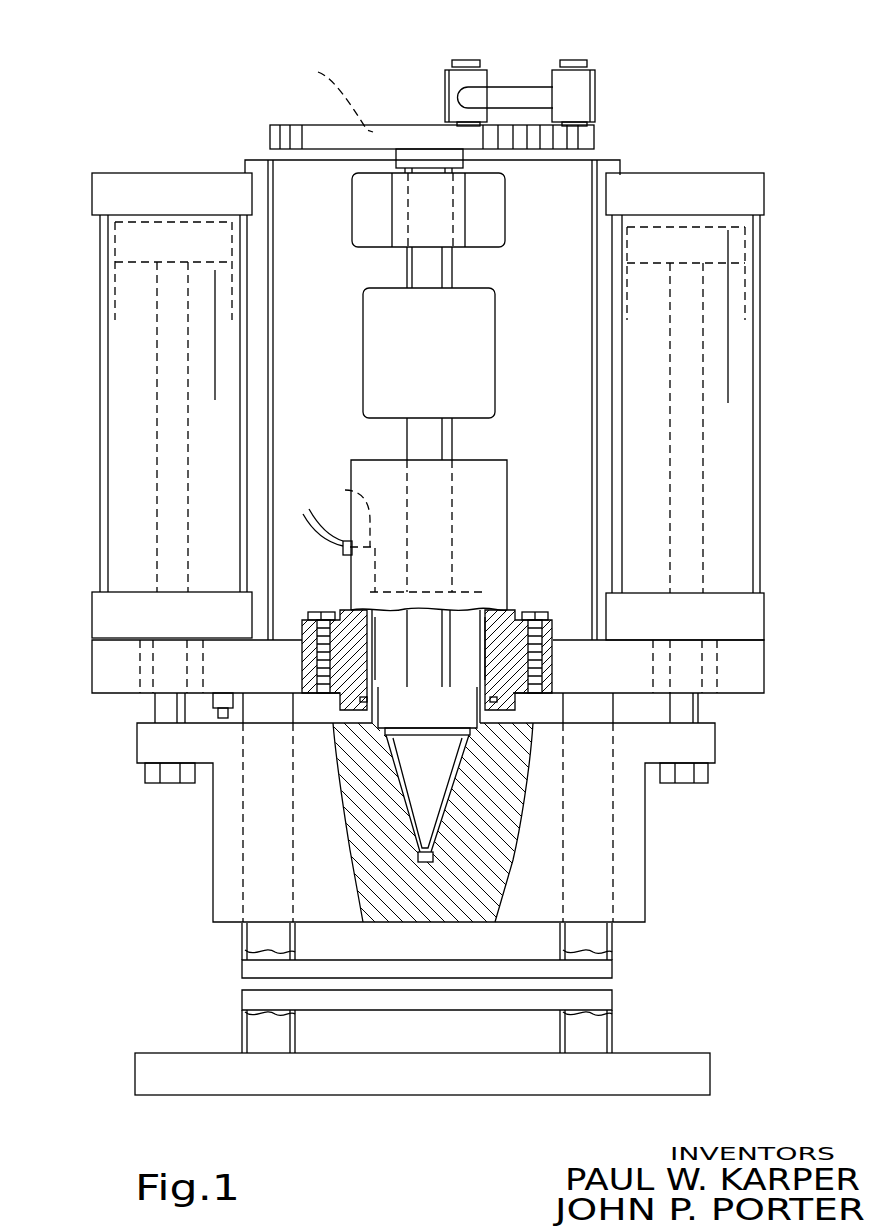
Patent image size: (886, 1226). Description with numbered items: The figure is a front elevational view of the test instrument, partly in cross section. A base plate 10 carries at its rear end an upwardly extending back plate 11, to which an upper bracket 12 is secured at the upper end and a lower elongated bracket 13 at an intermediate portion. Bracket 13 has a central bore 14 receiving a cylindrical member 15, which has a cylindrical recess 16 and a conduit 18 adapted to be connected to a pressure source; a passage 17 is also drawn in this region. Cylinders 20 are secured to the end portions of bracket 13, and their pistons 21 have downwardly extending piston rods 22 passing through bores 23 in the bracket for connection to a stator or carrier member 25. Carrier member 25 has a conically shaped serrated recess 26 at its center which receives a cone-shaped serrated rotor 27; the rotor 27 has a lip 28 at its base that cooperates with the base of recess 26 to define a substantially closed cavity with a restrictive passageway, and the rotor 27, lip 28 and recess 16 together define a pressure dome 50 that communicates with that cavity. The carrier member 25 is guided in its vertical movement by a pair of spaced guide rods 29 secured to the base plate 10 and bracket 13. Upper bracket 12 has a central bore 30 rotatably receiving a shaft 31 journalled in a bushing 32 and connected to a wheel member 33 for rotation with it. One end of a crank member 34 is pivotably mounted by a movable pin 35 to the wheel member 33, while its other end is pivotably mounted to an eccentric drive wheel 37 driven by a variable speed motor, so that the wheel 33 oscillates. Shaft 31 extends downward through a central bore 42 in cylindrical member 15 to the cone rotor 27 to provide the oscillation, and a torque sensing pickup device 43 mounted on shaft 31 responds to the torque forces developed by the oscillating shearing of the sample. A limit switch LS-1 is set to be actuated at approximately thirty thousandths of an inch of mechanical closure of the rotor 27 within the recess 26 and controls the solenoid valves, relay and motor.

The base plate 10 is at (690, 1062).
The back plate 11 is at (603, 170).
The upper bracket 12 is at (524, 183).
The lower elongated bracket 13 is at (745, 688).
The bore 14 is at (548, 662).
The cylindrical member 15 is at (505, 547).
The cylindrical recess 16 is at (378, 622).
The fluid passage 17 is at (340, 531).
The conduit 18 is at (332, 549).
The cylinders 20 is at (113, 187).
The pistons 21 is at (137, 263).
The piston rods 22 is at (163, 706).
The bores 23 is at (143, 673).
The carrier member 25 is at (212, 900).
The conically shaped serrated recess 26 is at (418, 793).
The cone-shaped serrated rotor 27 is at (427, 787).
The lip 28 is at (387, 727).
The guide rods 29 is at (597, 940).
The central bore 30 is at (450, 237).
The shaft 31 is at (417, 268).
The bushing 32 is at (425, 157).
The wheel member 33 is at (328, 137).
The crank member 34 is at (513, 95).
The movable pin 35 is at (588, 68).
The eccentric drive wheel 37 is at (321, 91).
The central bore 42 is at (450, 473).
The torque sensing pickup device 43 is at (483, 358).
The pressure dome 50 is at (465, 632).
The limit switch LS-1 is at (224, 705).